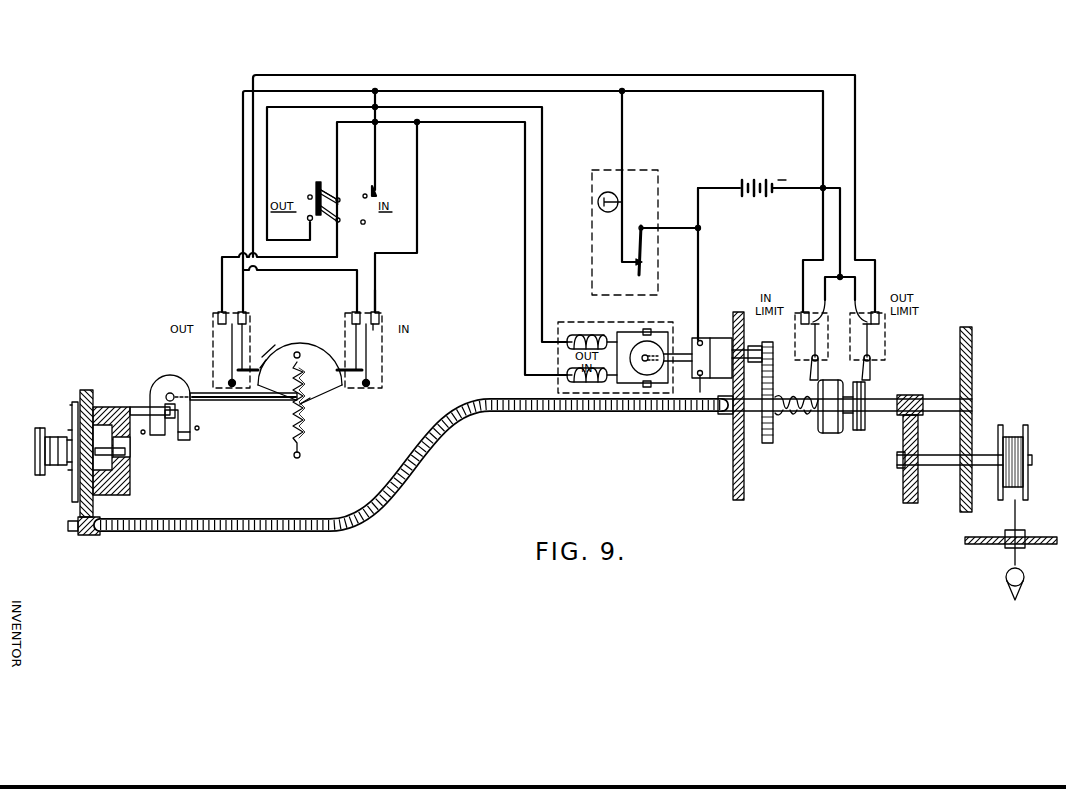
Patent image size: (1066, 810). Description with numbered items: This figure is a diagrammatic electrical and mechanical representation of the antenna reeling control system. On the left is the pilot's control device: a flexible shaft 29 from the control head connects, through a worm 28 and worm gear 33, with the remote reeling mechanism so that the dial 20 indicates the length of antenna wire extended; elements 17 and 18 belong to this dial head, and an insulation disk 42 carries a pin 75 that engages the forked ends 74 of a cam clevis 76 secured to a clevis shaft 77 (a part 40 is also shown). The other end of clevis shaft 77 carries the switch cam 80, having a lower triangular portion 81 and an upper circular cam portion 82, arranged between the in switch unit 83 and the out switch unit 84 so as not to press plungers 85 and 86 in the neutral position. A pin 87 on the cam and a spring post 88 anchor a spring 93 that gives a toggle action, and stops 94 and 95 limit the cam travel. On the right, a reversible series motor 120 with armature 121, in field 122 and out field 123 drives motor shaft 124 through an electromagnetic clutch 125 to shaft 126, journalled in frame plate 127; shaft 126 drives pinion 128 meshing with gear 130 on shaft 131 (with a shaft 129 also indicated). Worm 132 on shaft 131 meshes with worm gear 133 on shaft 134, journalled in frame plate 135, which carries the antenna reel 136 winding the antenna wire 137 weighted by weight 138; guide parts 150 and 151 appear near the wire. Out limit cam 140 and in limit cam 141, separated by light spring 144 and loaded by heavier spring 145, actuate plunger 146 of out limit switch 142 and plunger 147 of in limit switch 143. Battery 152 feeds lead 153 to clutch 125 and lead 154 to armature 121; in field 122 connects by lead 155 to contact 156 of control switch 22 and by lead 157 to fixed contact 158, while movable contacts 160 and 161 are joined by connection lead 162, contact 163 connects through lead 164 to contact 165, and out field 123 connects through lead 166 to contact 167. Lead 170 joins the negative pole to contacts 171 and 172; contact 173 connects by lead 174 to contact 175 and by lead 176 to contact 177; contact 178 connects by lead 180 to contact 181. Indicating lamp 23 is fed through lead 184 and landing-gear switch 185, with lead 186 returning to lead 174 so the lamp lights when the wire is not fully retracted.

The hub knob 17 is at (40, 475).
The disc 18 is at (70, 408).
The dial 20 is at (72, 490).
The manual control switch 22 is at (341, 156).
The indicating lamp 23 is at (600, 208).
The worm 28 is at (88, 535).
The flexible shaft 29 is at (232, 532).
The worm gear 33 is at (80, 505).
The pin 40 is at (125, 452).
The insulation disk 42 is at (130, 487).
The forked ends 74 is at (170, 440).
The pin 75 is at (140, 405).
The cam clevis 76 is at (165, 377).
The clevis shaft 77 is at (228, 402).
The switch cam 80 is at (318, 352).
The lower triangular shaped portion 81 is at (312, 396).
The upper circular cam portion 82 is at (272, 348).
The in switch unit 83 is at (382, 350).
The out switch unit 84 is at (213, 350).
The switch plunger 85 is at (345, 388).
The switch plunger 86 is at (268, 385).
The pin 87 is at (300, 352).
The spring post 88 is at (296, 458).
The spring 93 is at (305, 432).
The stop 94 is at (199, 430).
The stop 95 is at (144, 434).
The reversible series motor 120 is at (550, 388).
The armature 121 is at (652, 341).
The in field 122 is at (595, 382).
The out field 123 is at (590, 335).
The motor shaft 124 is at (680, 354).
The electromagnetic clutch 125 is at (718, 338).
The shaft 126 is at (755, 362).
The frame plate 127 is at (710, 406).
The pinion 128 is at (770, 342).
The shaft 129 is at (845, 405).
The gear 130 is at (767, 443).
The shaft 131 is at (800, 414).
The worm 132 is at (910, 395).
The worm gear 133 is at (903, 495).
The shaft 134 is at (950, 455).
The frame plate 135 is at (972, 352).
The antenna reel 136 is at (1003, 430).
The antenna wire 137 is at (1016, 502).
The weight 138 is at (1006, 580).
The out limit cam 140 is at (862, 430).
The in limit cam 141 is at (832, 433).
The out limit switch 142 is at (885, 340).
The in limit switch 143 is at (812, 370).
The light spring 144 is at (850, 414).
The heavier compression spring 145 is at (783, 415).
The plunger 146 is at (870, 370).
The plunger 147 is at (805, 384).
The guide block 150 is at (1022, 530).
The guide bar 151 is at (980, 544).
The battery 152 is at (748, 180).
The lead 153 is at (698, 245).
The lead 154 is at (655, 383).
The lead 155 is at (470, 122).
The contact 156 is at (339, 200).
The lead 157 is at (417, 232).
The fixed contact 158 is at (380, 318).
The movable contact 160 is at (375, 312).
The movable contact 161 is at (222, 312).
The connection lead 162 is at (378, 262).
The contact 163 is at (218, 318).
The lead 164 is at (232, 257).
The contact 165 is at (338, 222).
The lead 166 is at (545, 107).
The contact 167 is at (306, 222).
The lead 170 is at (840, 238).
The contact 171 is at (834, 299).
The contact 172 is at (848, 306).
The contact 173 is at (795, 318).
The lead 174 is at (693, 98).
The contact 175 is at (370, 190).
The lead 176 is at (243, 91).
The contact 177 is at (248, 318).
The contact 178 is at (880, 318).
The lead 180 is at (690, 80).
The contact 181 is at (352, 318).
The lead 184 is at (678, 228).
The switch 185 is at (641, 275).
The lead 186 is at (622, 140).